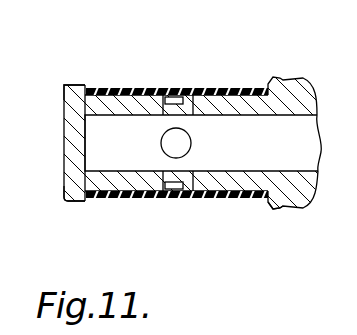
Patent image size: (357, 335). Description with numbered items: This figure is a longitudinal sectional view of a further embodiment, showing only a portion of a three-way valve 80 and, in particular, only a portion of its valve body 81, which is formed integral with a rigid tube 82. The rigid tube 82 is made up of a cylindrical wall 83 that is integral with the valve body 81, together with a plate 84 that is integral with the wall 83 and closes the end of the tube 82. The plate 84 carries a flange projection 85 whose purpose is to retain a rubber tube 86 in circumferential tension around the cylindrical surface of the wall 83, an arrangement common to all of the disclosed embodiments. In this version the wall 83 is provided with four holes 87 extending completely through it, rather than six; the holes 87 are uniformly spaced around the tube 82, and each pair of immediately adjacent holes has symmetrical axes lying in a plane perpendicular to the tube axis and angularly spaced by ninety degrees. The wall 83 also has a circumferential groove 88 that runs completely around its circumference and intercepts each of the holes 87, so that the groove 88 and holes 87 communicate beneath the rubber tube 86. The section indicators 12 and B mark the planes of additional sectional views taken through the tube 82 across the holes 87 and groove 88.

The three-way valve 80 is at (178, 141).
The valve body 81 is at (272, 206).
The rigid tube 82 is at (55, 142).
The cylindrical wall 83 is at (255, 183).
The plate 84 is at (78, 183).
The flange projection 85 is at (90, 88).
The rubber tube 86 is at (217, 88).
The holes 87 is at (162, 115).
The circumferential groove 88 is at (185, 106).
The section line 12- 12 is at (118, 80).
The section line B- B is at (232, 80).